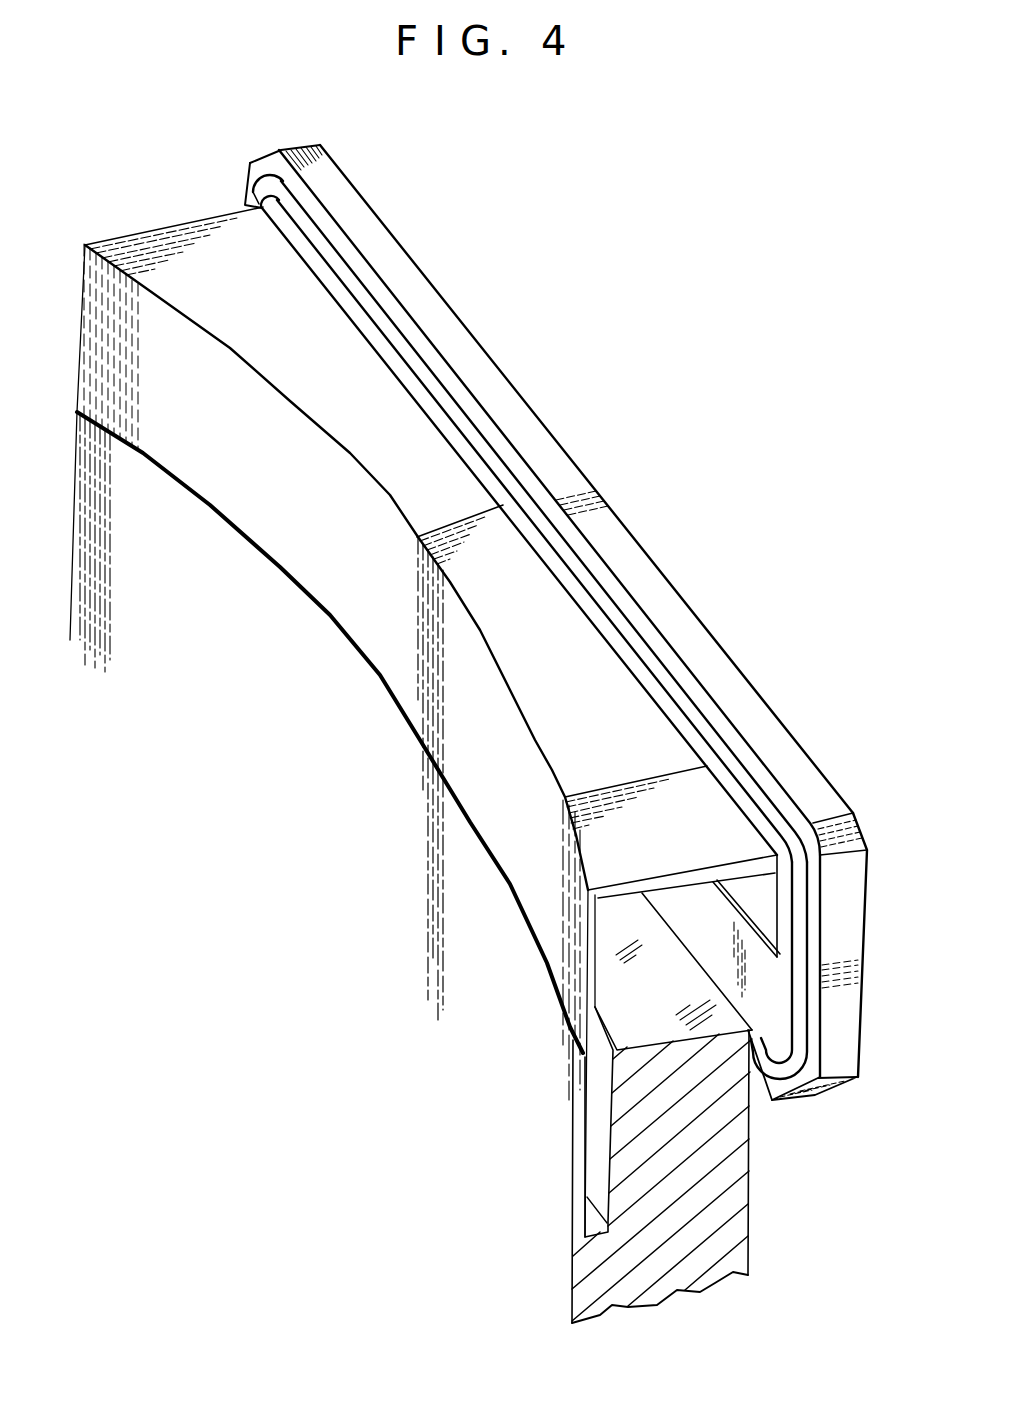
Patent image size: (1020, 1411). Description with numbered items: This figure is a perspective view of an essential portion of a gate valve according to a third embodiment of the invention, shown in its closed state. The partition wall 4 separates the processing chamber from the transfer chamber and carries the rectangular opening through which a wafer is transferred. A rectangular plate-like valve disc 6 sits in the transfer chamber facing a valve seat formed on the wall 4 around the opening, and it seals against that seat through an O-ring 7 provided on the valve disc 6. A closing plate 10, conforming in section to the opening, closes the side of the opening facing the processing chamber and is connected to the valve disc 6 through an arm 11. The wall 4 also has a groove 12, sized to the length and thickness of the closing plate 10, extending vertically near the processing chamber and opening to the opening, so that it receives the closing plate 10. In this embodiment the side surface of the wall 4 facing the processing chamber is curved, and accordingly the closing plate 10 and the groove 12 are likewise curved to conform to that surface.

The partition wall 4 is at (713, 1227).
The valve disc 6 is at (677, 598).
The O-ring 7 is at (797, 998).
The closing plate 10 is at (445, 743).
The arm 11 is at (449, 490).
The groove 12 is at (598, 1168).